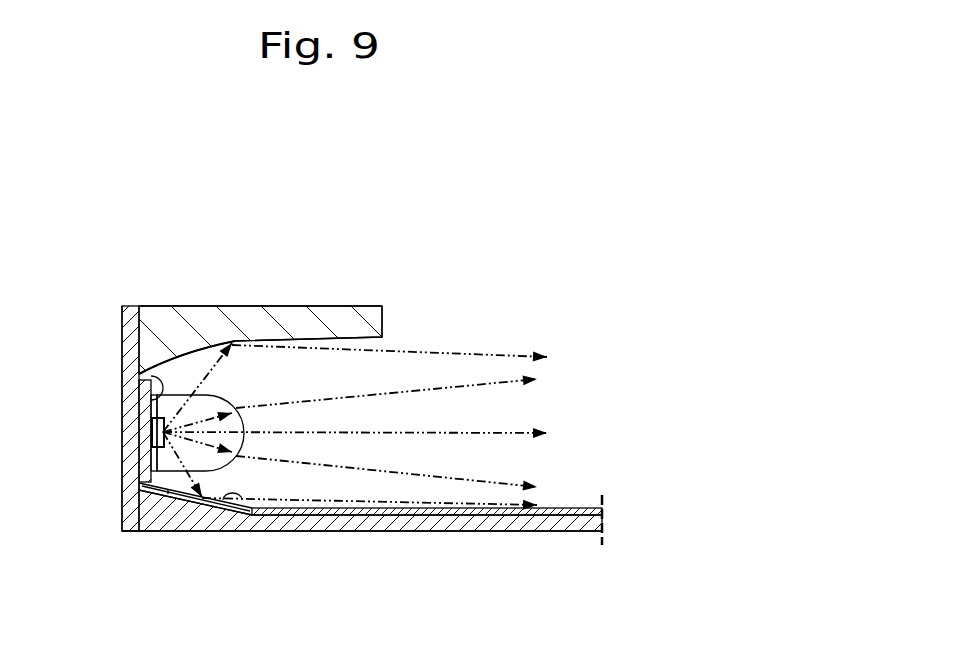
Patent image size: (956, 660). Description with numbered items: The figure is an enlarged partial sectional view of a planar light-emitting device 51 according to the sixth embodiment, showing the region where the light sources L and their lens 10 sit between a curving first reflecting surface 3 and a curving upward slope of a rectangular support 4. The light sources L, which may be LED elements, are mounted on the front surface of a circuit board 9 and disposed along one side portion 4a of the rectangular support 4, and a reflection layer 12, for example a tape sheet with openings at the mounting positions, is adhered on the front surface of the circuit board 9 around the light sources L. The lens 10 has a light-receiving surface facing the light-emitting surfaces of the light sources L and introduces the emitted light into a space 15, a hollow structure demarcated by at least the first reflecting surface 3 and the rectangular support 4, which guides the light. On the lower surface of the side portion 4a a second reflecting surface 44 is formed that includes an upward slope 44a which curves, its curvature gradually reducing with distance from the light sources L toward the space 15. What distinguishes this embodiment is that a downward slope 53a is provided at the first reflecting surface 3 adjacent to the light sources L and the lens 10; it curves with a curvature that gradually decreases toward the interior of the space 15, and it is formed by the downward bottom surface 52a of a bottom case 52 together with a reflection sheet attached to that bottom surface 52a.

The planar light-emitting device 51 is at (495, 257).
The reflection layer 12 is at (139, 373).
The bottom case 52 is at (578, 532).
The rectangular support 4 is at (208, 305).
The side portion 4a is at (265, 313).
The second reflecting surface 44 is at (348, 342).
The upward slope 44a is at (212, 352).
The circuit board 9 is at (122, 423).
The lens 10 is at (244, 444).
The first reflecting surface 3 is at (565, 508).
The bottom surface 52a is at (187, 490).
The downward slope 53a is at (242, 500).
The light sources L is at (168, 490).
The space 15 is at (478, 590).